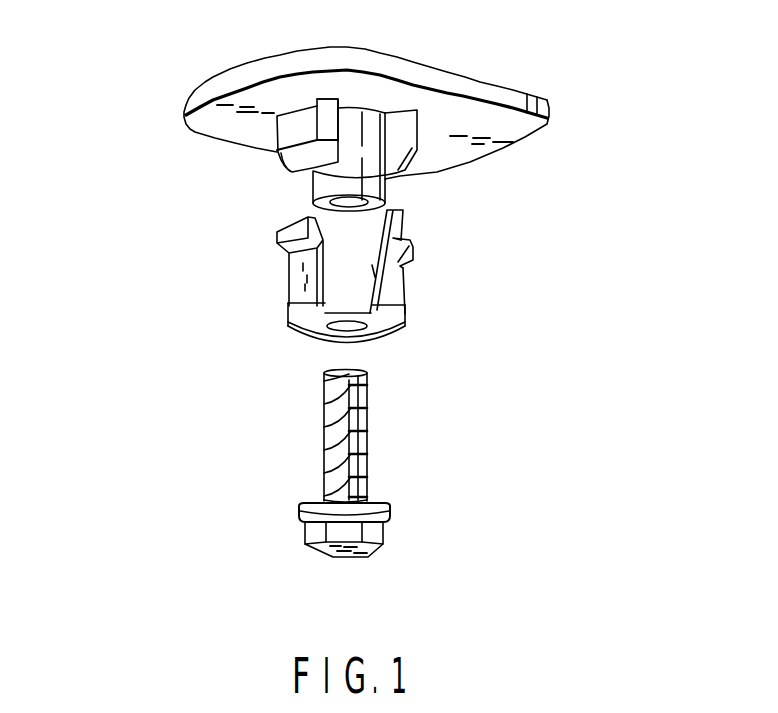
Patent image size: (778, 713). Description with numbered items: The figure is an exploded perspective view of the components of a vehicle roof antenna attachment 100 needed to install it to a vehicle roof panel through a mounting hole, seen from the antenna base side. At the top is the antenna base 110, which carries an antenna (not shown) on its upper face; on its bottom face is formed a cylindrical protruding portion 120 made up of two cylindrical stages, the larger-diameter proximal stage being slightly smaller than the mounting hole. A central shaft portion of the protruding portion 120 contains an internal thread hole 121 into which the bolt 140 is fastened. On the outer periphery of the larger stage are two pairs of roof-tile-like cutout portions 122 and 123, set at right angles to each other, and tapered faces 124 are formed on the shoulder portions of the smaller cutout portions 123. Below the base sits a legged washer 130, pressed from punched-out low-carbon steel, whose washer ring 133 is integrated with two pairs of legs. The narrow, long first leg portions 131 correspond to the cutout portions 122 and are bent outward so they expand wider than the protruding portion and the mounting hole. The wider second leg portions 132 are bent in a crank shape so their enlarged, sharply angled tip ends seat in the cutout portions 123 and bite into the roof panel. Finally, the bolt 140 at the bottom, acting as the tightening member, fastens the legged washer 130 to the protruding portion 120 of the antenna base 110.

The vehicle roof antenna attachment 100 is at (548, 110).
The antenna base 110 is at (186, 106).
The cylindrical protruding portion 120 is at (288, 179).
The internal thread hole 121 is at (328, 217).
The roof-tile-like cutout portions 122 is at (400, 100).
The roof-tile-like cutout portions 123 is at (297, 120).
The tapered faces 124 is at (290, 172).
The legged washer 130 is at (300, 333).
The first leg portions 131 is at (403, 225).
The second leg portions 132 is at (298, 272).
The washer ring 133 is at (383, 327).
The bolt 140 is at (334, 552).